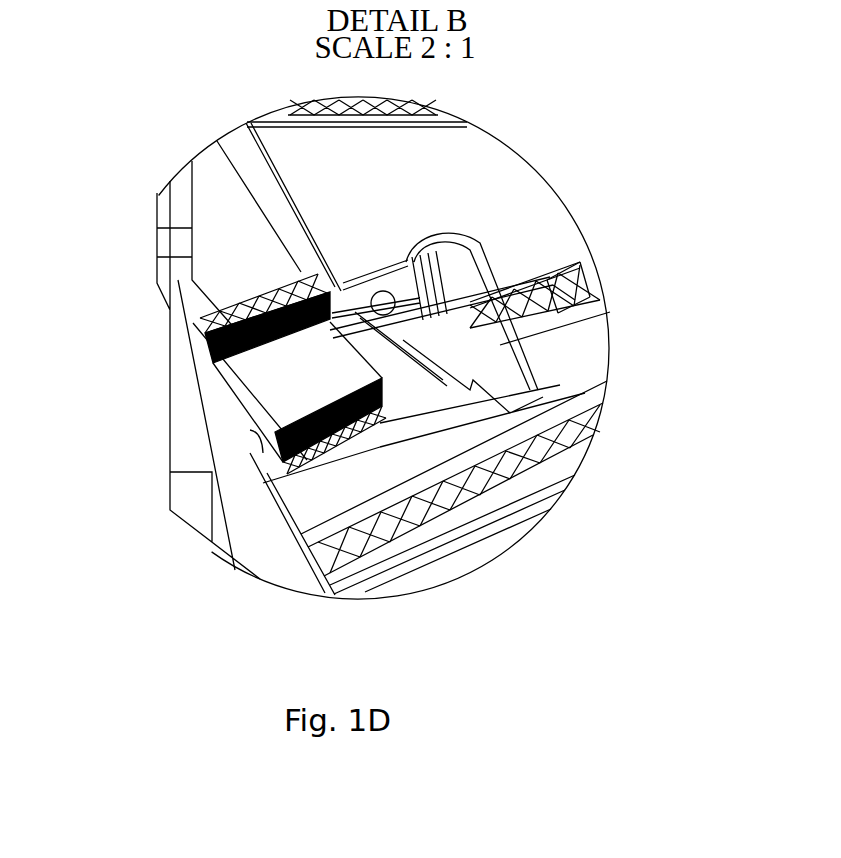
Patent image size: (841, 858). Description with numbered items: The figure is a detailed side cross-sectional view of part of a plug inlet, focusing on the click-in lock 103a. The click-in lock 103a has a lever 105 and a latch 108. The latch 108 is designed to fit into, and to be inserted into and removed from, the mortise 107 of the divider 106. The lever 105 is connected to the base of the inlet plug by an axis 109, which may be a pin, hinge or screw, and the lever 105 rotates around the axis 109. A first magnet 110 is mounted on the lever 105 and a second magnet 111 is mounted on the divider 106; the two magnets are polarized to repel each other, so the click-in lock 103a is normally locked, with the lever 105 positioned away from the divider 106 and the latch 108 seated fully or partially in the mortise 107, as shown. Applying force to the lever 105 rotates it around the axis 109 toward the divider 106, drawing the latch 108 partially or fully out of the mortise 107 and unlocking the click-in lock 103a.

The click-in lock 103a is at (506, 654).
The lever 105 is at (220, 318).
The divider 106 is at (257, 478).
The mortise 107 is at (537, 313).
The latch 108 is at (487, 357).
The axis 109 is at (370, 313).
The first magnet 110 is at (252, 348).
The second magnet 111 is at (283, 430).